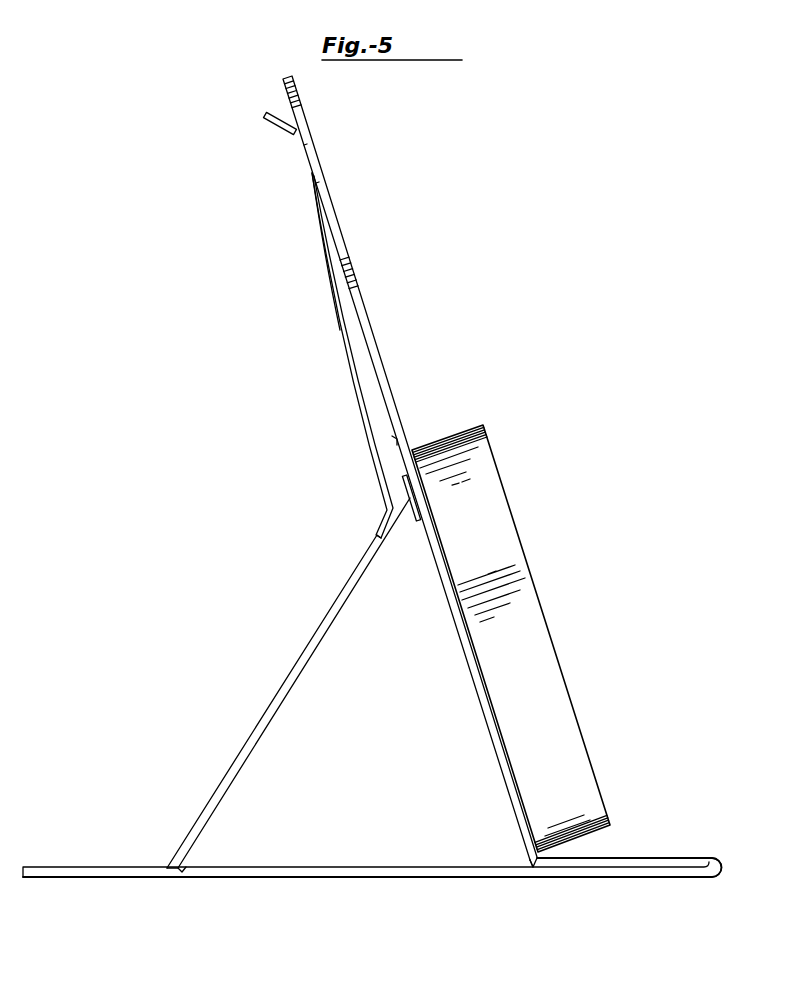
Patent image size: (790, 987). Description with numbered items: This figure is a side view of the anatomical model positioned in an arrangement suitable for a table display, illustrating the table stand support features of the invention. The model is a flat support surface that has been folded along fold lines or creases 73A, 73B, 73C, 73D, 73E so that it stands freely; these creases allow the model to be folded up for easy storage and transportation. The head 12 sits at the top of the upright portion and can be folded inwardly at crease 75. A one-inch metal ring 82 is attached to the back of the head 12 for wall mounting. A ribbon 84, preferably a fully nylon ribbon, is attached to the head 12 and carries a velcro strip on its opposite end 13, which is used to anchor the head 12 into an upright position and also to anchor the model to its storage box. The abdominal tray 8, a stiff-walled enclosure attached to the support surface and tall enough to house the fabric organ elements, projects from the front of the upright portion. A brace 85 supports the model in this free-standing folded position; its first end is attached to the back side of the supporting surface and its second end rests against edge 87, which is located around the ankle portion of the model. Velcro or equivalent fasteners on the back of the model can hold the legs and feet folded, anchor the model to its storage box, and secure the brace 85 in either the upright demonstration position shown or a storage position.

The abdominal tray 8 is at (557, 658).
The head 12 is at (343, 243).
The opposite end 13 is at (398, 533).
The fold line 73A is at (397, 443).
The fold line 73B is at (535, 877).
The fold line 73C is at (701, 862).
The fold line 73D is at (533, 865).
The fold line 73E is at (183, 870).
The crease 75 is at (349, 290).
The metal ring 82 is at (265, 115).
The ribbon 84 is at (312, 213).
The brace 85 is at (283, 683).
The edge 87 is at (165, 871).